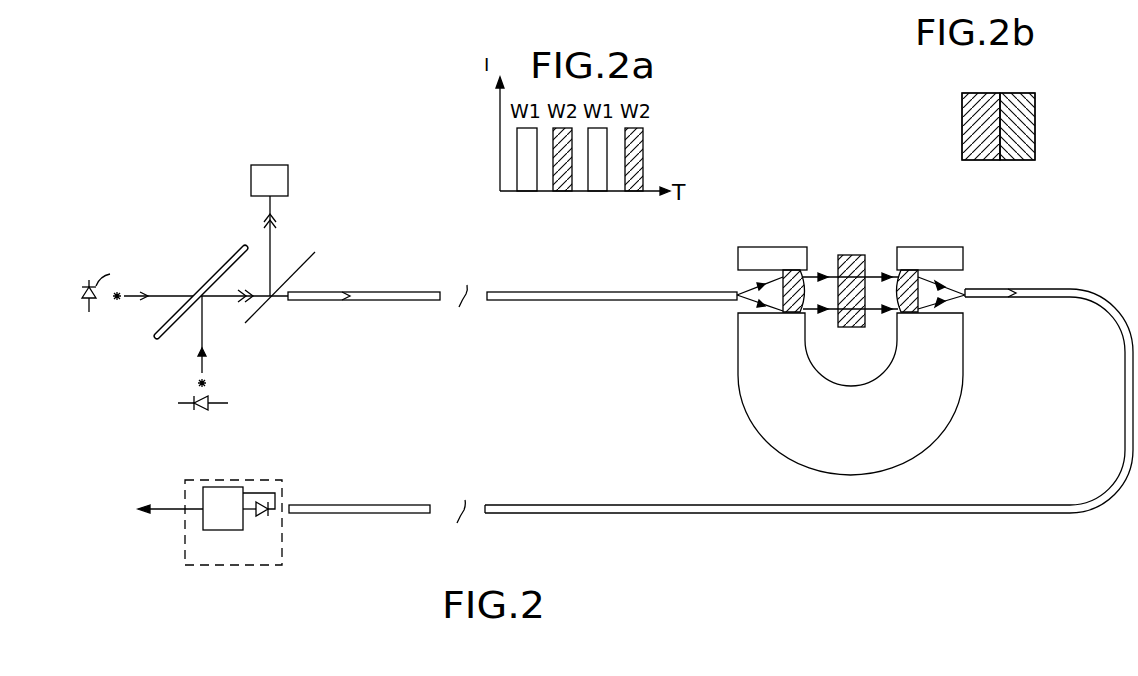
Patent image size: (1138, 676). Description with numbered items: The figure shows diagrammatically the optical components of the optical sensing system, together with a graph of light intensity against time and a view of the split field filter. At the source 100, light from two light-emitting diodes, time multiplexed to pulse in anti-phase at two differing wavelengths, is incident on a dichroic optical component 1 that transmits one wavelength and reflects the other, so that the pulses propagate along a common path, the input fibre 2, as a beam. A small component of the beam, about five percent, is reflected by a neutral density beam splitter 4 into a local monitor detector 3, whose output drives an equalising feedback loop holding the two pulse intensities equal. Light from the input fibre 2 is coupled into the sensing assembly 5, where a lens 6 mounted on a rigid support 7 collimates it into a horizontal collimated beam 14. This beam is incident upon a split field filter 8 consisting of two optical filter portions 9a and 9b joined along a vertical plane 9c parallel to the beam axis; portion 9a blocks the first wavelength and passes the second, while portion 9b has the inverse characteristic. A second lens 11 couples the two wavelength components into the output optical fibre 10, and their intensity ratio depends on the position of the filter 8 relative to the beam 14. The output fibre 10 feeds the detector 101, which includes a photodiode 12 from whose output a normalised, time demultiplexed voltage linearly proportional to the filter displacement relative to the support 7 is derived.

In FIG. 2, the dichroic optical component 1 is at (207, 283).
In FIG. 2, the input fibre 2 is at (395, 292).
In FIG. 2, the local monitor detector 3 is at (283, 167).
In FIG. 2, the neutral density beam splitter 4 is at (296, 262).
In FIG. 2, the sensing assembly 5 is at (730, 240).
In FIG. 2, the lens 6 is at (806, 290).
In FIG. 2, the rigid support 7 is at (948, 365).
In FIG. 2, the split field filter 8 is at (865, 258).
In FIG. 2b, the split field filter 8 is at (972, 149).
In FIG. 2b, the optical filter portion 9a is at (986, 160).
In FIG. 2b, the second optical filter portion 9b is at (1014, 160).
In FIG. 2b, the vertical plane 9c is at (1000, 160).
In FIG. 2, the output optical fibre 10 is at (1104, 312).
In FIG. 2, the second lens 11 is at (898, 290).
In FIG. 2, the photodiode 12 is at (262, 516).
In FIG. 2, the collimated beam 14 is at (826, 269).
In FIG. 2, the source 100 is at (190, 232).
In FIG. 2, the detector 101 is at (172, 487).